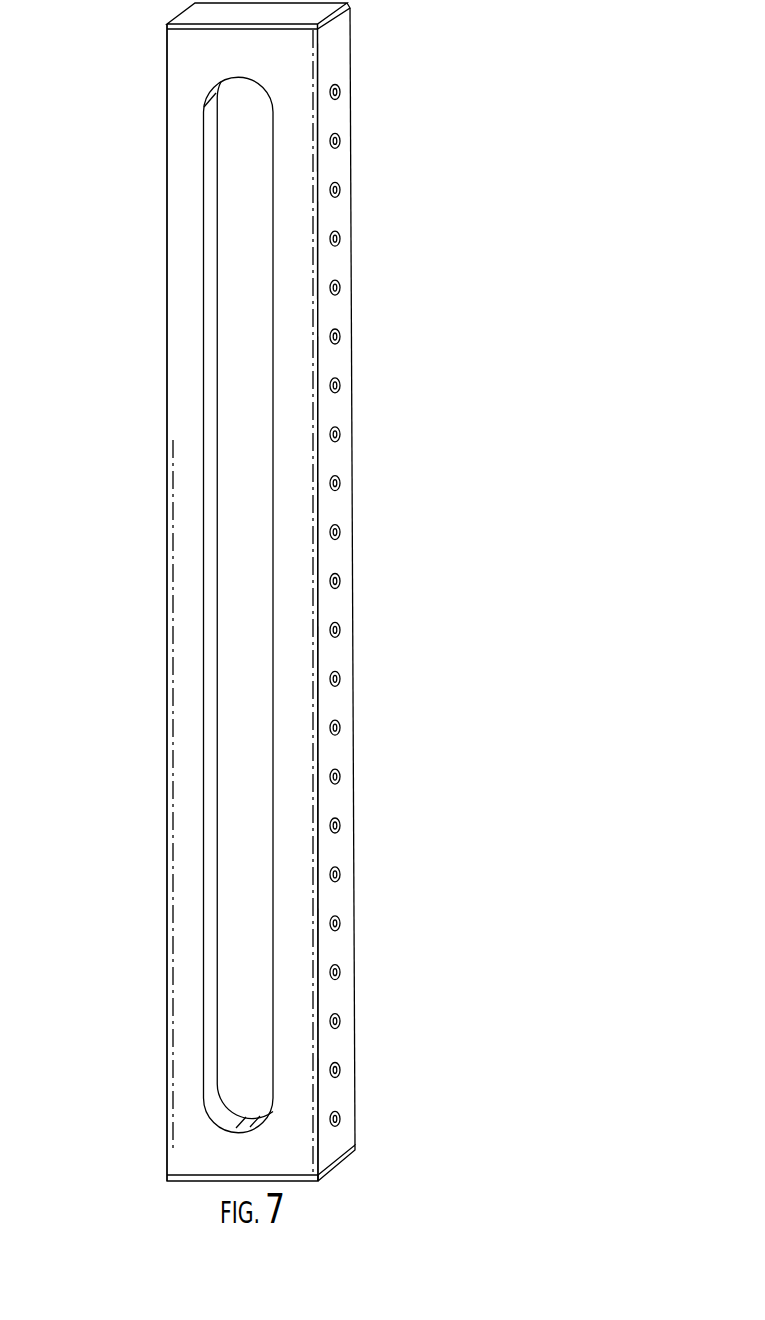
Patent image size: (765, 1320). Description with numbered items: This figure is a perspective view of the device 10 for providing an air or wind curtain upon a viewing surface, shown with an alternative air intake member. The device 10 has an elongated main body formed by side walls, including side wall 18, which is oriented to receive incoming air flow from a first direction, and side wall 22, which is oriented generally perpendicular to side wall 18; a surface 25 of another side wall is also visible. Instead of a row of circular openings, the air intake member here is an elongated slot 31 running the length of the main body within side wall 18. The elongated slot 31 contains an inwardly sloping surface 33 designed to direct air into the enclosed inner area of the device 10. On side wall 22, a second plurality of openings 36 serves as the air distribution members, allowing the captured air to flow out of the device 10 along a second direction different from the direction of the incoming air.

The device 10 is at (148, 83).
The side wall 18 is at (178, 145).
The side wall 22 is at (333, 60).
The surface 25 is at (243, 1030).
The elongated slot 31 is at (205, 497).
The inwardly sloping surface 33 is at (213, 863).
The second plurality of openings 36 is at (340, 142).